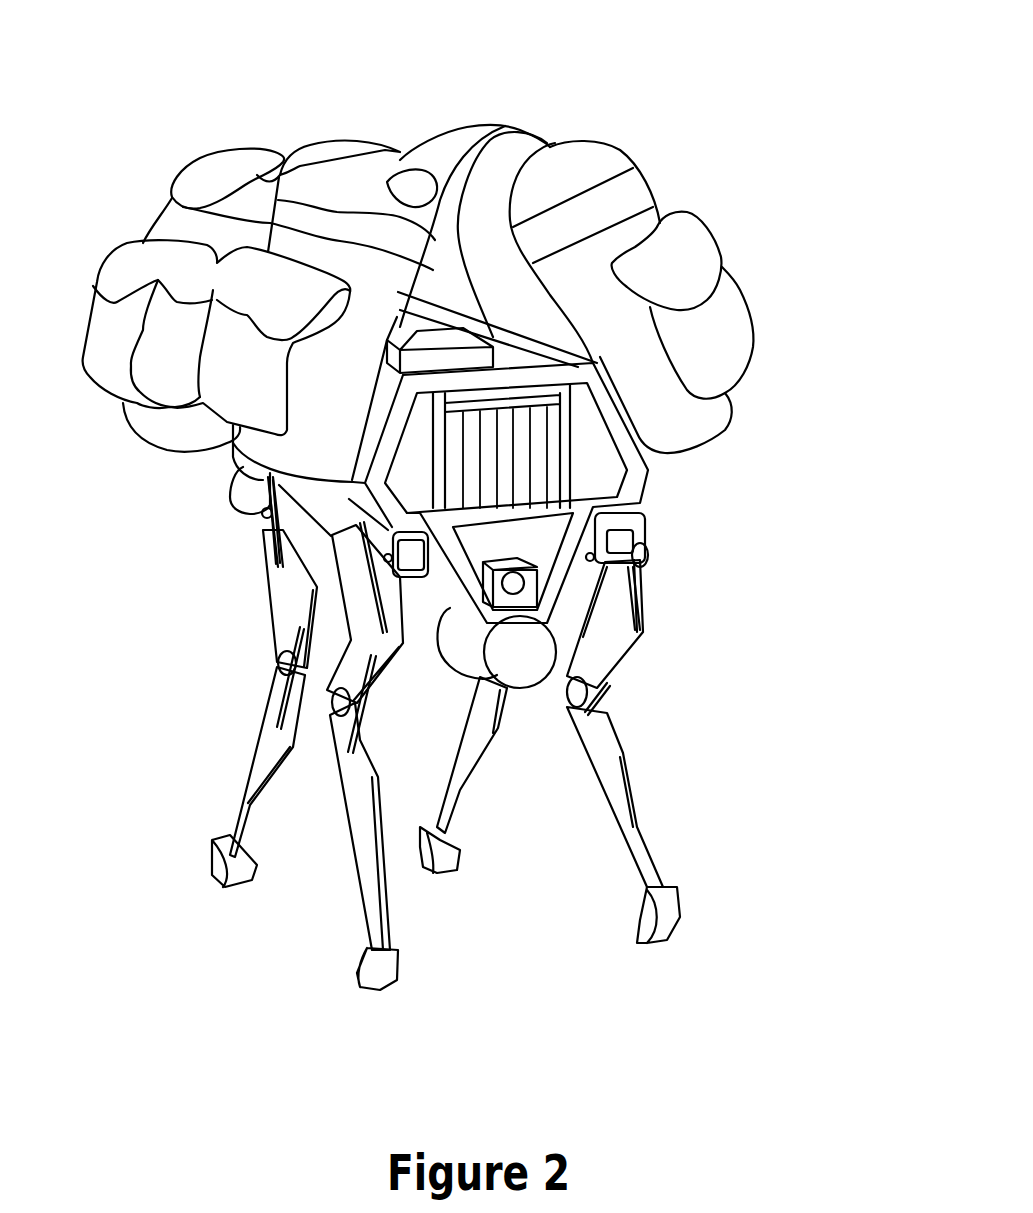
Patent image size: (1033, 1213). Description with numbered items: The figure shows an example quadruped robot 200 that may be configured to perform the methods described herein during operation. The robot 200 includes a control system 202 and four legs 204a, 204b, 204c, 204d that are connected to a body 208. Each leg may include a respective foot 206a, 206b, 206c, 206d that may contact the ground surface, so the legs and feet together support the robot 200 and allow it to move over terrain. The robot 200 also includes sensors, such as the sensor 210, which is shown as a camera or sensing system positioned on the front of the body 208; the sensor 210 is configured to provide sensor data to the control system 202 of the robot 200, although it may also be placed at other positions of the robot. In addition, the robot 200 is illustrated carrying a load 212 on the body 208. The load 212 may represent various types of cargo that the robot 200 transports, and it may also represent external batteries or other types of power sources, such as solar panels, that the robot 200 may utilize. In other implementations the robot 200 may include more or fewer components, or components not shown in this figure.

The quadruped robot 200 is at (575, 60).
The control system 202 is at (398, 337).
The leg 204a is at (248, 665).
The leg 204b is at (412, 930).
The leg 204c is at (487, 835).
The leg 204d is at (652, 790).
The foot 206a is at (240, 887).
The foot 206b is at (400, 973).
The foot 206c is at (460, 870).
The foot 206d is at (680, 923).
The body 208 is at (647, 480).
The sensor 210 is at (493, 557).
The load 212 is at (168, 178).